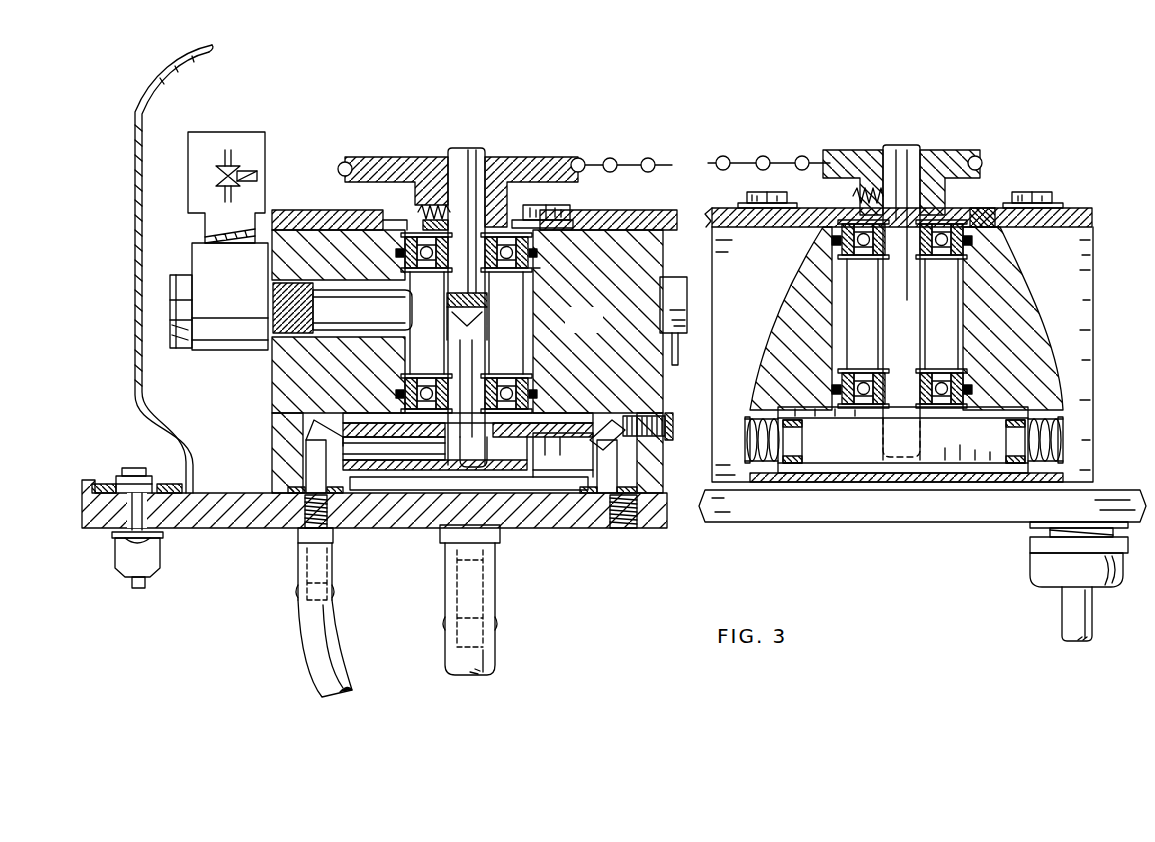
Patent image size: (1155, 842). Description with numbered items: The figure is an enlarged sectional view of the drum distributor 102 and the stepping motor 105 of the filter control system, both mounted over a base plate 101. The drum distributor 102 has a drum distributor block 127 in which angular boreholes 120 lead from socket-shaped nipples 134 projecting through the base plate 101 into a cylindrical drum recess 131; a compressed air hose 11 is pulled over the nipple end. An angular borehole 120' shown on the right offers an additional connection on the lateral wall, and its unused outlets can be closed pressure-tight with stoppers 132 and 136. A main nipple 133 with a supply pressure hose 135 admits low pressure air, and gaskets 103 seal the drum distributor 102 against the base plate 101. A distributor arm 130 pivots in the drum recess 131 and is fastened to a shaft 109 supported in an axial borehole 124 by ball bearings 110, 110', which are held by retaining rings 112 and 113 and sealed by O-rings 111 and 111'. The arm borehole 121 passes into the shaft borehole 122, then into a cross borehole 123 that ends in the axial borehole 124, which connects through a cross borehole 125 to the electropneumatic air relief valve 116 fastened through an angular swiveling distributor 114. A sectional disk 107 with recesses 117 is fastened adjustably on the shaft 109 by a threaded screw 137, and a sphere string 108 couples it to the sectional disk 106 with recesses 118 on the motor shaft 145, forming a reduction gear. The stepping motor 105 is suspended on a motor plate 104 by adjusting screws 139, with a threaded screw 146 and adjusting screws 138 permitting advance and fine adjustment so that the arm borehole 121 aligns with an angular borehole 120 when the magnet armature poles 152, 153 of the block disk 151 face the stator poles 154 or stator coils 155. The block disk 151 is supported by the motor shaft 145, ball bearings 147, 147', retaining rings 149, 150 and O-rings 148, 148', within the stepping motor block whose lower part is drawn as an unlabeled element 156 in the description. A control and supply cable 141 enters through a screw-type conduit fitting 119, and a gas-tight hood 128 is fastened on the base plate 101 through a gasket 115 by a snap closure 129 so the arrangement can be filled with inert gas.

The compressed air hose 11 is at (310, 632).
The base plate 101 is at (702, 527).
The drum distributor 102 is at (305, 196).
The gasket 103 is at (275, 483).
The motor plate 104 is at (707, 216).
The stepping motor 105 is at (1088, 206).
The sectional disk 106 is at (960, 155).
The sectional disk 107 is at (530, 162).
The sphere string 108 is at (668, 158).
The shaft 109 is at (459, 168).
The ball bearing 110 is at (469, 519).
The ball bearing 110' is at (395, 231).
The O-ring 111 is at (509, 378).
The O-ring 111' is at (544, 229).
The retaining ring 112 is at (533, 268).
The retaining ring 113 is at (446, 378).
The angular swiveling distributor 114 is at (207, 260).
The gasket 115 is at (167, 490).
The air relief valve 116 is at (256, 140).
The recess 117 is at (580, 158).
The recess 118 is at (831, 156).
The screw-type conduit fitting 119 is at (1043, 573).
The angular borehole 120 is at (287, 452).
The angular borehole 120' is at (639, 456).
The arm borehole 121 is at (388, 455).
The shaft borehole 122 is at (473, 352).
The cross borehole 123 is at (492, 318).
The axial borehole 124 is at (442, 322).
The cross borehole 125 is at (333, 327).
The drum distributor block 127 is at (600, 331).
The hood 128 is at (142, 396).
The snap closure 129 is at (158, 546).
The distributor arm 130 is at (468, 441).
The drum recess 131 is at (570, 466).
The stopper 132 is at (642, 418).
The main nipple 133 is at (477, 598).
The nipple 134 is at (313, 565).
The supply pressure hose 135 is at (483, 655).
The stopper 136 is at (617, 529).
The threaded screw 137 is at (432, 205).
The adjusting screw 138 is at (553, 204).
The adjusting screw 139 is at (750, 192).
The control and supply cable 141 is at (1062, 624).
The motor shaft 145 is at (898, 155).
The threaded screw 146 is at (853, 196).
The ball bearing 147 is at (908, 488).
The ball bearing 147' is at (986, 187).
The O-ring 148 is at (1020, 388).
The O-ring 148' is at (981, 213).
The retaining ring 149 is at (970, 257).
The retaining ring 150 is at (933, 360).
The block disk 151 is at (833, 465).
The magnet armature pole 152 is at (795, 464).
The magnet armature pole 153 is at (1012, 464).
The stator pole 154 is at (1060, 440).
The stator coil 155 is at (1052, 430).
The bottom plate 156 is at (870, 482).